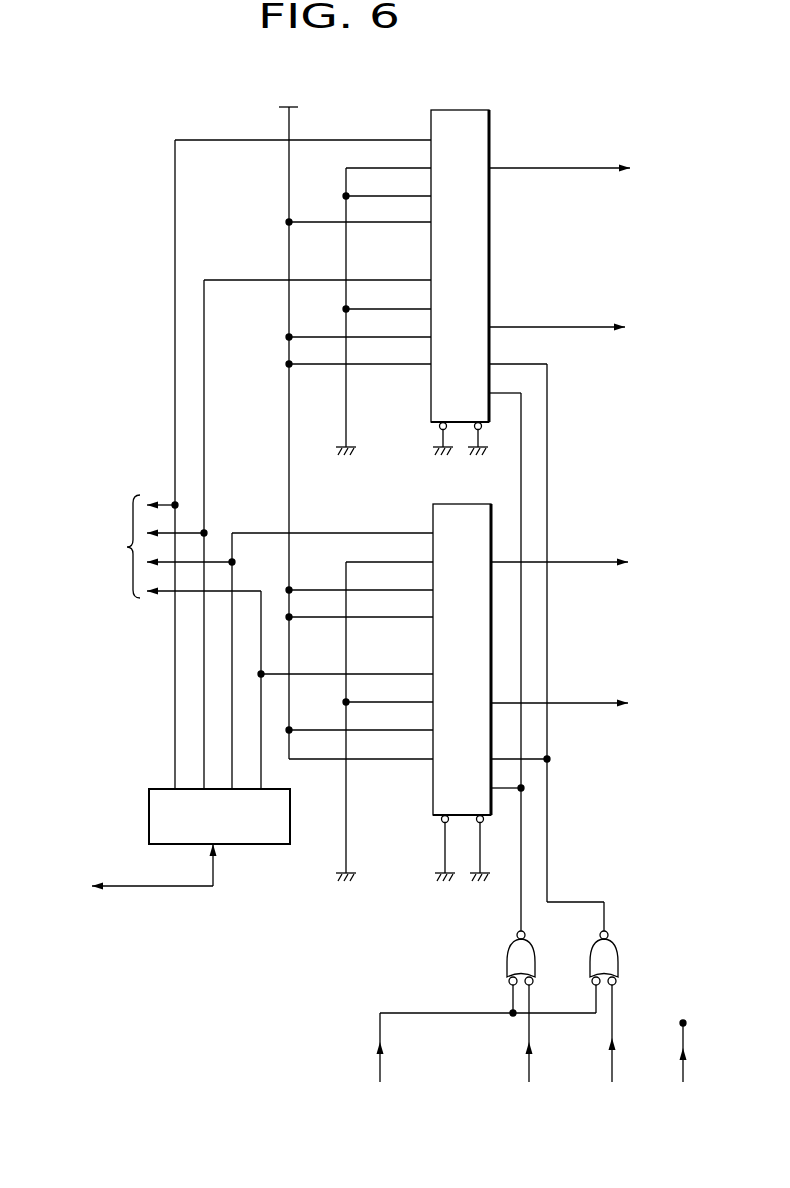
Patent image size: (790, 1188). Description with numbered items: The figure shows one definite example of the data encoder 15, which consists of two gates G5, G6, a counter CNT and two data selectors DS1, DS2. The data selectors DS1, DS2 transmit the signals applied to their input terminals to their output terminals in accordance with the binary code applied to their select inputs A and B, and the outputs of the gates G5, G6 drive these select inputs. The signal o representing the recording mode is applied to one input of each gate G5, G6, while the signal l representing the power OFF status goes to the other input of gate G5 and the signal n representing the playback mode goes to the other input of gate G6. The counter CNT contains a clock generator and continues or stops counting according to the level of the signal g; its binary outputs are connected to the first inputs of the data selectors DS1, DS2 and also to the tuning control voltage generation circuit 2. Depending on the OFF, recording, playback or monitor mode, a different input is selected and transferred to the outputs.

The data encoder 15 is at (361, 624).
The tuning control voltage generation circuit 2 is at (145, 546).
The data selector DS1 is at (473, 118).
The data selector DS2 is at (467, 510).
The counter CNT is at (158, 816).
The gate G5 is at (508, 960).
The gate G6 is at (592, 960).